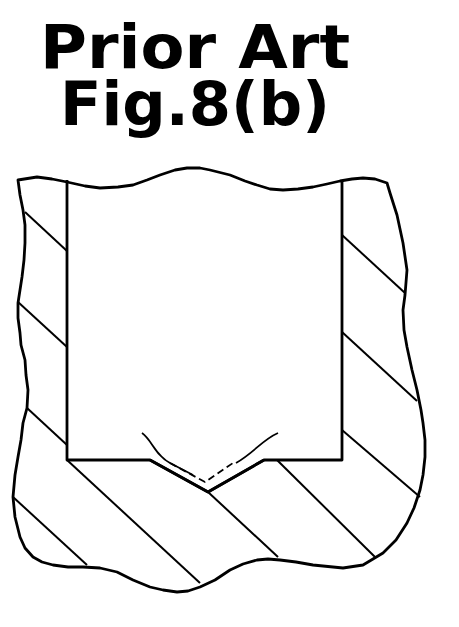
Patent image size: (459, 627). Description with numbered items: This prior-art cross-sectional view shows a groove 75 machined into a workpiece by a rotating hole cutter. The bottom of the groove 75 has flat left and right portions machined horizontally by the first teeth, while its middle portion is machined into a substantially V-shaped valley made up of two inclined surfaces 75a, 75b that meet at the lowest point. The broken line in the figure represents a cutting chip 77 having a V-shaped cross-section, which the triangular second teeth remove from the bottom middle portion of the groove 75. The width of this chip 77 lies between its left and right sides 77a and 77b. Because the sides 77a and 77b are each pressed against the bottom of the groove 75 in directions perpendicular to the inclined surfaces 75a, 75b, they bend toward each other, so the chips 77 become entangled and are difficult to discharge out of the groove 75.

The groove 75 is at (68, 281).
The inclined surface 75a is at (183, 466).
The inclined surface 75b is at (233, 465).
The cutting chip 77 is at (189, 472).
The side of the chip 77a is at (142, 433).
The side of the chip 77b is at (278, 433).